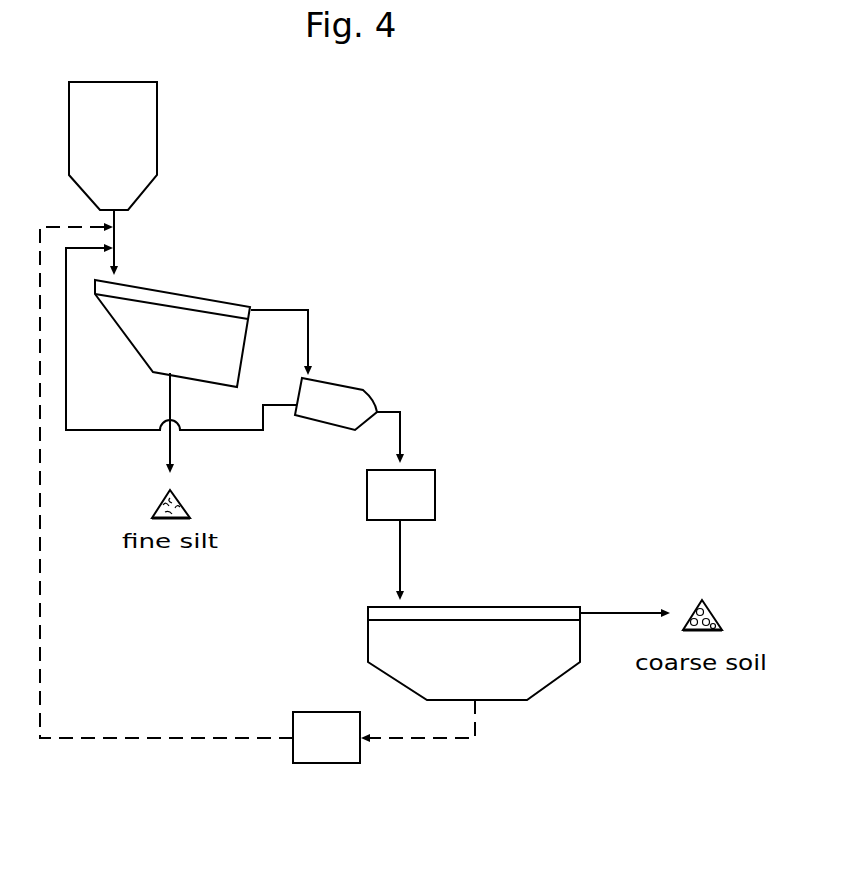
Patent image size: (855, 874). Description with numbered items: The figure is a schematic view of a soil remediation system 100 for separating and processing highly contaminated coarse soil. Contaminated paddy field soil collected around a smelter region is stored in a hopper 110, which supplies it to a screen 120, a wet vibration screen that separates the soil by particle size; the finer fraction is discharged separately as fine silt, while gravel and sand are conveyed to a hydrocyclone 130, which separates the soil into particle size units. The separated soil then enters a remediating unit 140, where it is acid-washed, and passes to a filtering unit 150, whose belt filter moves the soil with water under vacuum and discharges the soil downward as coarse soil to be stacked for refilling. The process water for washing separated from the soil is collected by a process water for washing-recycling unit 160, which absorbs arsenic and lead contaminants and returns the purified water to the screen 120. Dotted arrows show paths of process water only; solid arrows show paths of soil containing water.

The soil remediation system 100 is at (500, 178).
The hopper 110 is at (158, 123).
The screen 120 is at (207, 295).
The hydrocyclone 130 is at (348, 387).
The remediating unit 140 is at (435, 493).
The filtering unit 150 is at (513, 607).
The process water for washing-recycling unit 160 is at (317, 712).